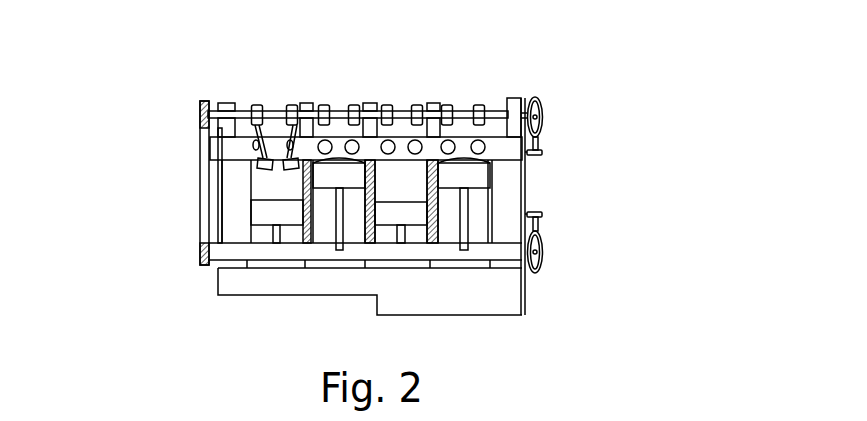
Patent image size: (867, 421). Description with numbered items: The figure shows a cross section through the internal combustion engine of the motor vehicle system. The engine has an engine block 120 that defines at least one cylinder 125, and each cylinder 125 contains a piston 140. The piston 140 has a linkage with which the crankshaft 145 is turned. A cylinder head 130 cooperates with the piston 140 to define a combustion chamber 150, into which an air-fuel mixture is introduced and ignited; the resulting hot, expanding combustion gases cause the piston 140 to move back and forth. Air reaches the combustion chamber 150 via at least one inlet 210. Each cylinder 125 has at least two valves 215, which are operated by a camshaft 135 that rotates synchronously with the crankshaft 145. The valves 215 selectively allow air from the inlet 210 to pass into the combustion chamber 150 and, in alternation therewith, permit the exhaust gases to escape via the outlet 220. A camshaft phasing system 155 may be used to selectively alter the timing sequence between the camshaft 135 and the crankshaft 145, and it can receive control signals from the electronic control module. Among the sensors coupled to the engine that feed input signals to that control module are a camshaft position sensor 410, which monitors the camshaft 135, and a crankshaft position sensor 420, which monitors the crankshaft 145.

The engine block 120 is at (203, 197).
The cylinder 125 is at (378, 182).
The cylinder head 130 is at (258, 153).
The camshaft 135 is at (272, 105).
The piston 140 is at (390, 217).
The crankshaft 145 is at (233, 262).
The combustion chamber 150 is at (500, 174).
The camshaft phasing system 155 is at (200, 102).
The inlet 210 is at (398, 110).
The valves 215 is at (258, 140).
The outlet 220 is at (337, 107).
The camshaft position sensor 410 is at (541, 152).
The crankshaft position sensor 420 is at (541, 215).